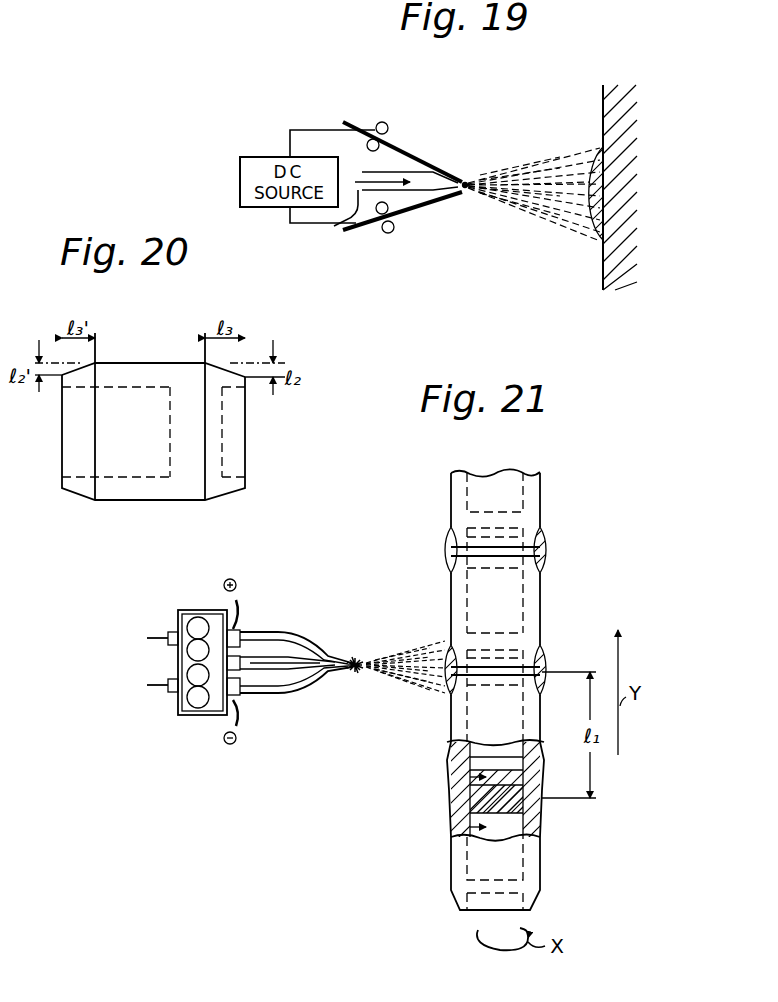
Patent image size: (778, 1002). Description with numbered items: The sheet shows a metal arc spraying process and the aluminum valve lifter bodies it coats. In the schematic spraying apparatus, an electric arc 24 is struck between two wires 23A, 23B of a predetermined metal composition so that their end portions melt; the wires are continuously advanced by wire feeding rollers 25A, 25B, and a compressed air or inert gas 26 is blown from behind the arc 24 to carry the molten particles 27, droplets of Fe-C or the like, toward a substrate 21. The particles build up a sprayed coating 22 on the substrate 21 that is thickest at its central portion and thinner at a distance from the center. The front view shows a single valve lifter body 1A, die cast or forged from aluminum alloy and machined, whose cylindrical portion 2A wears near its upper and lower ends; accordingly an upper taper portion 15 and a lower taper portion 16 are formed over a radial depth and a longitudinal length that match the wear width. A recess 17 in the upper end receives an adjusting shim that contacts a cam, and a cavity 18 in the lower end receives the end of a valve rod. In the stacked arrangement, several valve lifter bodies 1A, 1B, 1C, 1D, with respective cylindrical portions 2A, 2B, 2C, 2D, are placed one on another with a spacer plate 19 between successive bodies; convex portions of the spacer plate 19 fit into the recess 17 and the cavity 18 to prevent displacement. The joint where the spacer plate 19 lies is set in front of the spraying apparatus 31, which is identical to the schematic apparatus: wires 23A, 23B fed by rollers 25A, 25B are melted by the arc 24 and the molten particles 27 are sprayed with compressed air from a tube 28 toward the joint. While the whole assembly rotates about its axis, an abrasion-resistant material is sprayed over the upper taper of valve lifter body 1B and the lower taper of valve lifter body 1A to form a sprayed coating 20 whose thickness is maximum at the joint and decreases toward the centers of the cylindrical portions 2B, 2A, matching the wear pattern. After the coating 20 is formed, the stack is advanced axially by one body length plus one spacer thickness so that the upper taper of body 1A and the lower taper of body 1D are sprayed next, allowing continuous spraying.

In FIG. 20, the valve lifter body 1A is at (197, 501).
In FIG. 21, the valve lifter body 1A is at (543, 740).
In FIG. 21, the valve lifter body 1B is at (541, 617).
In FIG. 21, the valve lifter body 1C is at (541, 507).
In FIG. 21, the valve lifter body 1D is at (542, 856).
In FIG. 20, the cylindrical portion 2A is at (128, 501).
In FIG. 21, the cylindrical portion 2A is at (542, 718).
In FIG. 21, the cylindrical portion 2B is at (541, 597).
In FIG. 21, the cylindrical portion 2C is at (541, 487).
In FIG. 21, the cylindrical portion 2D is at (541, 879).
In FIG. 20, the taper portion 15 is at (226, 363).
In FIG. 20, the taper portion 16 is at (78, 363).
In FIG. 20, the recess 17 is at (230, 478).
In FIG. 21, the recess 17 is at (470, 780).
In FIG. 20, the cavity 18 is at (79, 478).
In FIG. 21, the cavity 18 is at (470, 828).
In FIG. 21, the spacer plate 19 is at (466, 800).
In FIG. 21, the sprayed coating 20 is at (545, 560).
In FIG. 19, the substrate 21 is at (612, 108).
In FIG. 19, the sprayed coating 22 is at (585, 150).
In FIG. 19, the wire 23A is at (414, 150).
In FIG. 21, the wire 23A is at (152, 638).
In FIG. 19, the wire 23B is at (420, 207).
In FIG. 21, the wire 23B is at (152, 685).
In FIG. 19, the electric arc 24 is at (466, 197).
In FIG. 21, the electric arc 24 is at (359, 654).
In FIG. 19, the wire feeding roller 25A is at (382, 122).
In FIG. 21, the wire feeding roller 25A is at (198, 627).
In FIG. 19, the wire feeding roller 25B is at (390, 236).
In FIG. 21, the wire feeding roller 25B is at (198, 708).
In FIG. 19, the compressed air or inert gas 26 is at (338, 230).
In FIG. 19, the molten particles 27 is at (524, 165).
In FIG. 21, the molten particles 27 is at (390, 686).
In FIG. 21, the tube 28 is at (270, 672).
In FIG. 21, the spraying apparatus 31 is at (292, 630).